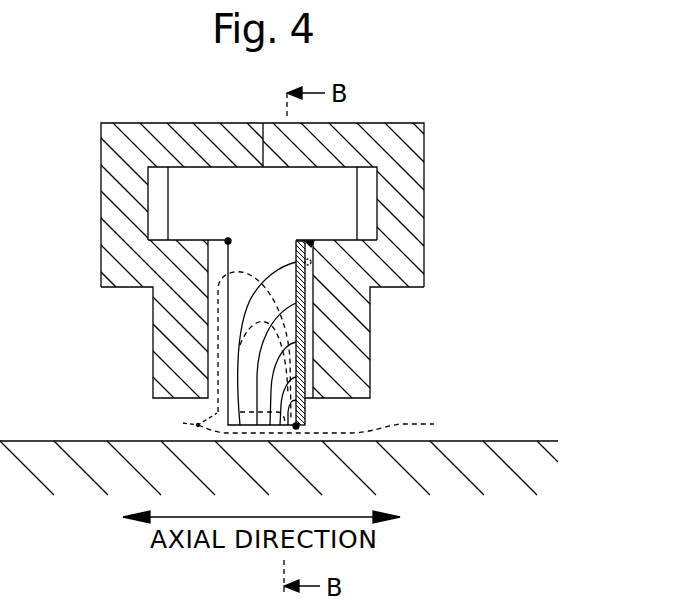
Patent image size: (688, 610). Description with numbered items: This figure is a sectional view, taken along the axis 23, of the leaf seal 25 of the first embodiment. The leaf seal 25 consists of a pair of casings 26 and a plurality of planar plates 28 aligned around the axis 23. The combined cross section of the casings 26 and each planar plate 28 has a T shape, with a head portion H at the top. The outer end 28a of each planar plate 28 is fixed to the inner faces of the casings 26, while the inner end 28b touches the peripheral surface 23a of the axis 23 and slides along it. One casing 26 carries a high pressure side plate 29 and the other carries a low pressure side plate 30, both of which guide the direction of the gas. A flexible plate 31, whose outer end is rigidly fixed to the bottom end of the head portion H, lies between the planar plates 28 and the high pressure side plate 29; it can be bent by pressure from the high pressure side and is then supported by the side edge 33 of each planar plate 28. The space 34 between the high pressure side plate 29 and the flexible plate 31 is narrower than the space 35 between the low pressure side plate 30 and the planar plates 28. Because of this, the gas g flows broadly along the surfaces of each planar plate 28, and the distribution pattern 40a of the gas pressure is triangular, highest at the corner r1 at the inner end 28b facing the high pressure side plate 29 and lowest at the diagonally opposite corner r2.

The axis 23 is at (470, 490).
The peripheral surface 23a is at (478, 441).
The leaf seal 25 is at (425, 123).
The casings 26 is at (185, 137).
The planar plate 28 is at (230, 312).
The outer end 28a is at (187, 182).
The inner end 28b is at (247, 417).
The high pressure side plate 29 is at (350, 340).
The low pressure side plate 30 is at (168, 360).
The flexible plate 31 is at (300, 330).
The side edge 33 is at (296, 257).
The space at the high pressure side 34 is at (313, 398).
The space at the low pressure side 35 is at (212, 404).
The distribution pattern of the gas pressure 40a is at (240, 287).
The head portion H is at (338, 182).
The gas g is at (325, 424).
The corner r1 is at (298, 425).
The corner r2 is at (228, 241).